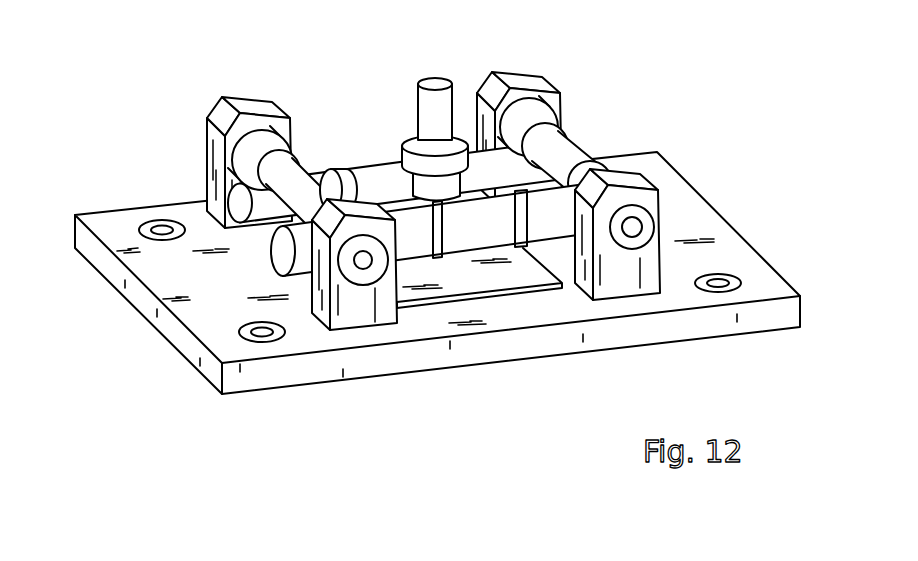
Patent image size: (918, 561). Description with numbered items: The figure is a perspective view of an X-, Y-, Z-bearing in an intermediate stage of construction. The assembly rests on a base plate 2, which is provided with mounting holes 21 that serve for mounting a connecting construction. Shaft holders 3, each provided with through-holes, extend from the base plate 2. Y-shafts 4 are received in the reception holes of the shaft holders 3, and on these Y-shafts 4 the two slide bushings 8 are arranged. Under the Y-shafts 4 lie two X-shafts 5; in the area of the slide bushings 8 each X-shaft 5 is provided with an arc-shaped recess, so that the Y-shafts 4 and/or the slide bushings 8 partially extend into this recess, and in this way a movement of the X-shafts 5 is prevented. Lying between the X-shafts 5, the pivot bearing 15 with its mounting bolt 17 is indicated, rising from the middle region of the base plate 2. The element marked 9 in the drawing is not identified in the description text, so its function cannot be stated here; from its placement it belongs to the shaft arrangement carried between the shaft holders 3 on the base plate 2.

The base plate 2 is at (760, 320).
The shaft holder 3 is at (253, 98).
The Y-shaft 4 is at (570, 135).
The X-shaft 5 is at (398, 172).
The slide bushing 8 is at (273, 130).
The guide rod 9 is at (358, 172).
The pivot bearing 15 is at (402, 113).
The mounting bolt 17 is at (436, 78).
The mounting hole 21 is at (742, 277).